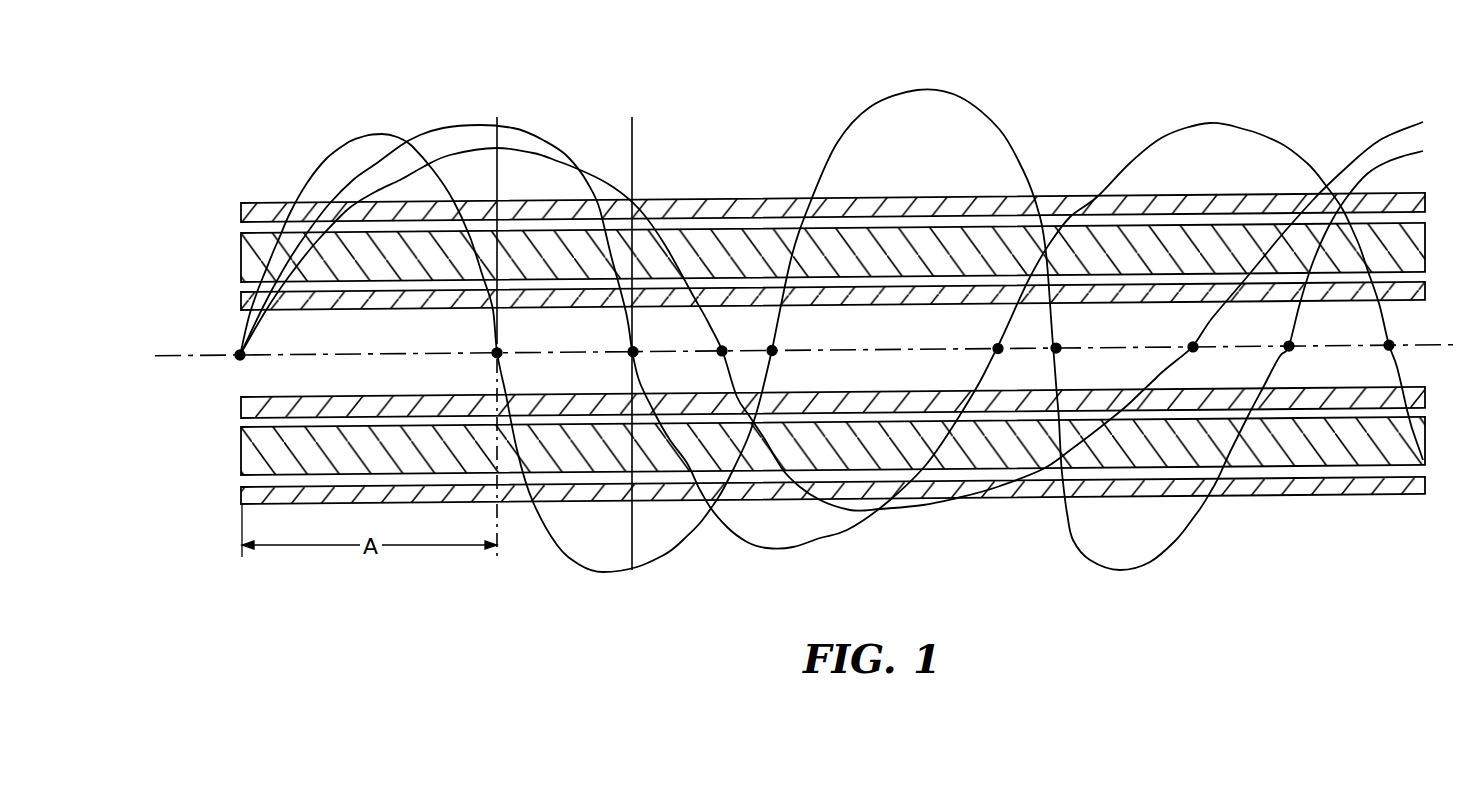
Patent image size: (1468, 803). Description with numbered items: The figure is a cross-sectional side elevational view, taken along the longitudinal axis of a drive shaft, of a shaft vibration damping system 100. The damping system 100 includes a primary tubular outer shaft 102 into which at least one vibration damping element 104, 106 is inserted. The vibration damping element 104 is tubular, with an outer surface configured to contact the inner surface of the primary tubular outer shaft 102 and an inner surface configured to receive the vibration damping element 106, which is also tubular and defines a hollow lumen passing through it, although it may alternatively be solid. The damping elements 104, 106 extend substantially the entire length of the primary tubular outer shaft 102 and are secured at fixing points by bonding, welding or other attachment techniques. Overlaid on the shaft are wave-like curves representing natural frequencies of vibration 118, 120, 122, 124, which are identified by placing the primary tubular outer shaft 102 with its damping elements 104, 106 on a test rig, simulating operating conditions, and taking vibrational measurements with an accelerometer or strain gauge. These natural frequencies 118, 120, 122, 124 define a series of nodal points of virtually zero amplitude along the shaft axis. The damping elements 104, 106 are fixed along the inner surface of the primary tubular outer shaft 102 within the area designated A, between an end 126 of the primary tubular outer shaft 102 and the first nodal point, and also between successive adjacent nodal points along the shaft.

The shaft vibration damping system 100 is at (463, 93).
The primary tubular outer shaft 102 is at (823, 198).
The vibration damping element 104 is at (240, 460).
The vibration damping element 106 is at (240, 302).
The natural frequency of vibration 118 is at (950, 95).
The natural frequency of vibration 120 is at (615, 187).
The natural frequency of vibration 122 is at (517, 127).
The natural frequency of vibration 124 is at (347, 141).
The end of primary tubular outer shaft 126 is at (240, 215).